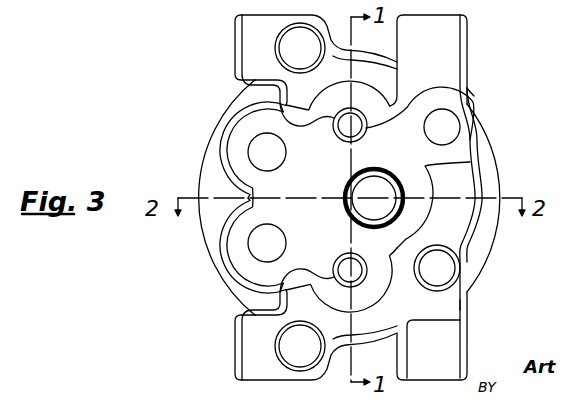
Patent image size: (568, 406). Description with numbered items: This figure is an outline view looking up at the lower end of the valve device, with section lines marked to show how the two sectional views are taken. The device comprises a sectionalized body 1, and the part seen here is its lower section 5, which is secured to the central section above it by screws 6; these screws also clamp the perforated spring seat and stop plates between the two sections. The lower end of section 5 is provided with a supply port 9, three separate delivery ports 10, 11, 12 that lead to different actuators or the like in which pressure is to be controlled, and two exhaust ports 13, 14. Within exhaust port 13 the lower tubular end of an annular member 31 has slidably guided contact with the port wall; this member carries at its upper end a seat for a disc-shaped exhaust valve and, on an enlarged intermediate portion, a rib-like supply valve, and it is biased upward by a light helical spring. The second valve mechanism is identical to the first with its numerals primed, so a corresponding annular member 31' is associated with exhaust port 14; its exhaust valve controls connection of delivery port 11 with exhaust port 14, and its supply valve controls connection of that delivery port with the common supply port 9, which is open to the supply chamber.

The sectionalized body 1 is at (500, 228).
The lower section 5 is at (472, 188).
The screws 6 is at (290, 48).
The supply port 9 is at (387, 188).
The delivery port 10 is at (258, 243).
The delivery port 11 is at (258, 152).
The delivery port 12 is at (452, 128).
The exhaust port 13 is at (338, 282).
The exhaust port 14 is at (338, 113).
The annular member 31 is at (487, 296).
The annular member 31' is at (493, 93).